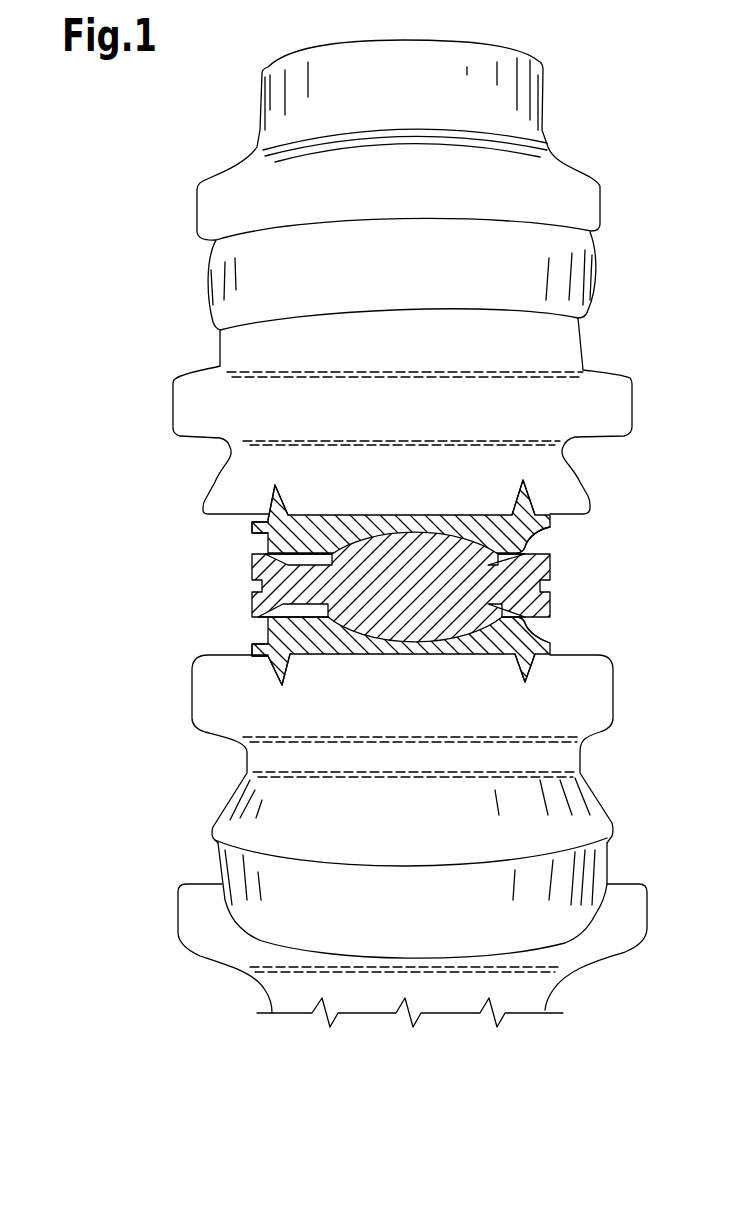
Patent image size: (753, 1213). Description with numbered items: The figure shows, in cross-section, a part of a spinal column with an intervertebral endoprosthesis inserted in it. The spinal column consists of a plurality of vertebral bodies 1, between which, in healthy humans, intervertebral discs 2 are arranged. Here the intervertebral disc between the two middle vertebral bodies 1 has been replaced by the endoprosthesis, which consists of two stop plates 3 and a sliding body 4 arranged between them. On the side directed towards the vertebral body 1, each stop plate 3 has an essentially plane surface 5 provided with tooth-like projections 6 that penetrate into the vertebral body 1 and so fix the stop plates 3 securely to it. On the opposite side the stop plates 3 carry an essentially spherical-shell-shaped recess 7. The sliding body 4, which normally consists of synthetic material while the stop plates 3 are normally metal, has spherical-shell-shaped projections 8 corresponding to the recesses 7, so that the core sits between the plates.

The vertebral body 1 is at (551, 145).
The intervertebral disc 2 is at (560, 273).
The stop plate 3 is at (252, 528).
The sliding body 4 is at (252, 598).
The plane surface 5 is at (353, 515).
The tooth-like projection 6 is at (270, 500).
The spherical-shell-shaped recess 7 is at (420, 532).
The spherical-shell-shaped projection 8 is at (538, 537).